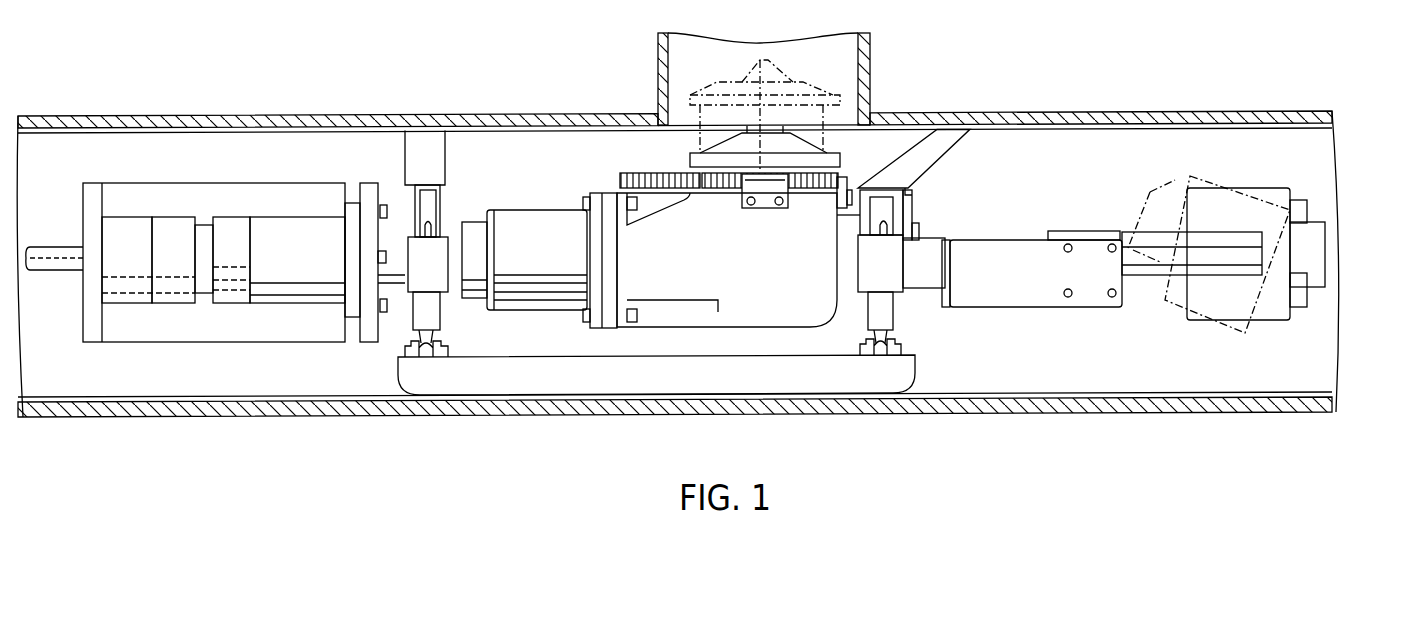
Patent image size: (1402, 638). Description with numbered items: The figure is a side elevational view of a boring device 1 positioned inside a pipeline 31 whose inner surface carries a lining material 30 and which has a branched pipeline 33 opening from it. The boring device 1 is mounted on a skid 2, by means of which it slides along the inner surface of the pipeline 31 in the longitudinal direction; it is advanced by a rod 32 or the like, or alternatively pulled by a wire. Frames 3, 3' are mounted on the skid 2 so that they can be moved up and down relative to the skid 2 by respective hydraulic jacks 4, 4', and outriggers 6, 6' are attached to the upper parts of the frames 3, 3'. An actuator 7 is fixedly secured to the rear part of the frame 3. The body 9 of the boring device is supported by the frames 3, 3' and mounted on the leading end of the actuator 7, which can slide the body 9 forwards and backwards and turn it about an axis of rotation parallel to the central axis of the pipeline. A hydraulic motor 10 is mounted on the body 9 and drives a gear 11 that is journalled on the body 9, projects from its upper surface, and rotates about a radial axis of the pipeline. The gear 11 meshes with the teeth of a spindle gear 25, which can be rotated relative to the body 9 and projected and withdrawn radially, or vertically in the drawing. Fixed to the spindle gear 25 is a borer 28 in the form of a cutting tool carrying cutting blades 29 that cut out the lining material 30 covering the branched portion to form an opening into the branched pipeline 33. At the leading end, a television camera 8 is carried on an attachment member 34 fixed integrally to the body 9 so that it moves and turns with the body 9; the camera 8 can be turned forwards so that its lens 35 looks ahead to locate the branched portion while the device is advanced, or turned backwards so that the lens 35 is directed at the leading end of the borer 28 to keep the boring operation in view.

The boring device 1 is at (548, 165).
The skid 2 is at (632, 382).
The frame 3 is at (375, 212).
The frame 3' is at (941, 207).
The hydraulic jack 4 is at (406, 277).
The hydraulic jack 4' is at (905, 272).
The outrigger 6 is at (450, 158).
The outrigger 6' is at (940, 162).
The actuator 7 is at (288, 242).
The television camera 8 is at (1233, 210).
The body of the boring device 9 is at (757, 283).
The hydraulic motor 10 is at (540, 275).
The gear 11 is at (625, 170).
The spindle gear 25 is at (840, 175).
The borer 28 is at (806, 152).
The cutting blades 29 is at (765, 127).
The lining material 30 is at (213, 120).
The pipeline 31 is at (678, 228).
The rod 32 is at (47, 257).
The branched pipeline 33 is at (658, 43).
The attachment member 34 is at (1165, 257).
The lens 35 is at (1313, 258).